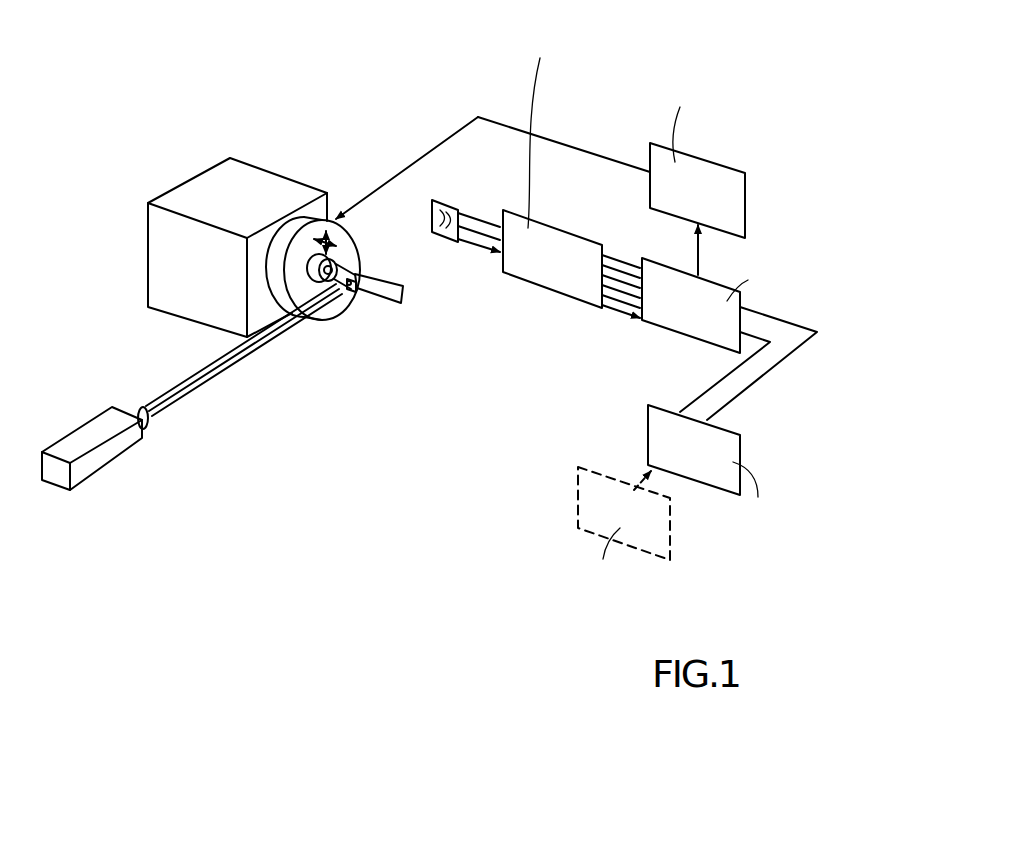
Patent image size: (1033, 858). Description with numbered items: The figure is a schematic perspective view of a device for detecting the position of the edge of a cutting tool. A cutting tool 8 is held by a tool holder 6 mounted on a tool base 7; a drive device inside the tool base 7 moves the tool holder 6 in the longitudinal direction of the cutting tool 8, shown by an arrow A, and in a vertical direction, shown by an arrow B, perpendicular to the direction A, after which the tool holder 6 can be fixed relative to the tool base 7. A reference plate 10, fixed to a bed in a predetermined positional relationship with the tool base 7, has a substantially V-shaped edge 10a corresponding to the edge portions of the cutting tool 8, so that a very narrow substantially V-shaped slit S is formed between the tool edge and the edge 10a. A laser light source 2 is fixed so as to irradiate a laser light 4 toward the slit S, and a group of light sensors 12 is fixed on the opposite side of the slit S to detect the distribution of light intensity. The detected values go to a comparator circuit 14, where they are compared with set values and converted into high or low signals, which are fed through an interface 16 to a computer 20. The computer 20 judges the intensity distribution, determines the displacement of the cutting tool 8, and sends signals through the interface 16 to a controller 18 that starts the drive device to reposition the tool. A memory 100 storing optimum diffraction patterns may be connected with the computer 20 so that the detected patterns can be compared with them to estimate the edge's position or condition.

The laser light source 2 is at (96, 410).
The laser light 4 is at (176, 378).
The tool holder 6 is at (317, 272).
The tool base 7 is at (148, 236).
The cutting tool 8 is at (326, 292).
The reference plate 10 is at (386, 300).
The edge 10a is at (357, 293).
The group of light sensors 12 is at (437, 207).
The comparator circuit 14 is at (560, 232).
The interface 16 is at (650, 238).
The controller 18 is at (745, 207).
The computer 20 is at (740, 432).
The memory 100 is at (671, 522).
The slit S is at (350, 286).
The arrow A is at (345, 245).
The arrow B is at (340, 227).